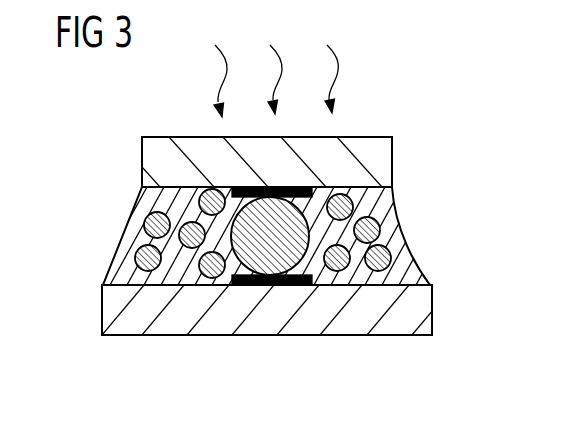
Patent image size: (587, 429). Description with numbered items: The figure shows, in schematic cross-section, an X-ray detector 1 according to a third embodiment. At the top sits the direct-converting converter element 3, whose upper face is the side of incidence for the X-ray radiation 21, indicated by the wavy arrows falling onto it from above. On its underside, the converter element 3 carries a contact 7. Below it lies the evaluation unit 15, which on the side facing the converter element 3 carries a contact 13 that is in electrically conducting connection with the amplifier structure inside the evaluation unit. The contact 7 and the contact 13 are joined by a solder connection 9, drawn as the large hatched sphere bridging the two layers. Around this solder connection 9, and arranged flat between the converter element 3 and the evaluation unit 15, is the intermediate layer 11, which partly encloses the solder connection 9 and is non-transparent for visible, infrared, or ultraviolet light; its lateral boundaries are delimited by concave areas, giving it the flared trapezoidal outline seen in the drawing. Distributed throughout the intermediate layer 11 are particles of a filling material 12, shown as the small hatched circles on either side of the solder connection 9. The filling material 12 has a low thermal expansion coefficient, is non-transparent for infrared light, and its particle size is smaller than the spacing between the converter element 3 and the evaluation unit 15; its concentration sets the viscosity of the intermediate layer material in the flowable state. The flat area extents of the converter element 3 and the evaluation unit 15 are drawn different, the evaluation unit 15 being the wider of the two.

The X-ray detector 1 is at (62, 139).
The direct-converting converter element 3 is at (383, 164).
The contact 7 is at (242, 187).
The solder connection 9 is at (251, 285).
The intermediate layer 11 is at (410, 276).
The filling material 12 is at (200, 192).
The contact 13 is at (284, 285).
The evaluation unit 15 is at (423, 303).
The X-ray radiation 21 is at (334, 62).